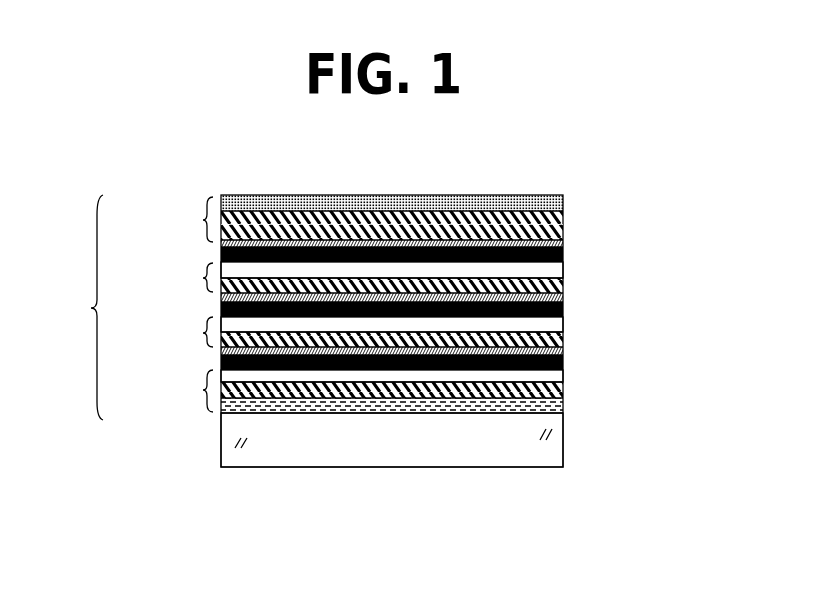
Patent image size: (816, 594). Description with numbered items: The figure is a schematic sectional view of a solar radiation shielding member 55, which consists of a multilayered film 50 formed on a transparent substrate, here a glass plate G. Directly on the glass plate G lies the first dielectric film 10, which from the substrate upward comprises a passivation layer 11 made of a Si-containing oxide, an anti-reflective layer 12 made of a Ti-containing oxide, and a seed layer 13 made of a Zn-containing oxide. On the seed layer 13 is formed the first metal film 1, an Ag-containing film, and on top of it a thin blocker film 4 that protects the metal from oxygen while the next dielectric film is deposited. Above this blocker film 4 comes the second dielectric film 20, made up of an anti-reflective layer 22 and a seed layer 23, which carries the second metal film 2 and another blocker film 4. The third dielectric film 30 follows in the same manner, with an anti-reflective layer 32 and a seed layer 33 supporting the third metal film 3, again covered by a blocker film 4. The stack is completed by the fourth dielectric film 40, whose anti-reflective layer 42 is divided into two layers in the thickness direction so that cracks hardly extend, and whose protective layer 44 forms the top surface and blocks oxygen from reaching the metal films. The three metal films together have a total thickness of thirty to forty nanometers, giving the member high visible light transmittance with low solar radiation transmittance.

The solar radiation shielding member 55 is at (216, 473).
The multilayered film 50 is at (80, 307).
The glass plate G is at (221, 437).
The first dielectric film 10 is at (203, 390).
The passivation layer 11 is at (563, 407).
The anti-reflective layer 12 is at (563, 392).
The seed layer 13 is at (563, 378).
The first metal film 1 is at (220, 362).
The blocker film 4 is at (220, 244).
The second dielectric film 20 is at (203, 333).
The anti-reflective layer 22 is at (563, 340).
The seed layer 23 is at (563, 325).
The second metal film 2 is at (220, 310).
The third dielectric film 30 is at (203, 278).
The anti-reflective layer 32 is at (563, 285).
The seed layer 33 is at (563, 270).
The third metal film 3 is at (220, 256).
The fourth dielectric film 40 is at (203, 220).
The anti-reflective layer 42 is at (563, 222).
The protective layer 44 is at (563, 204).